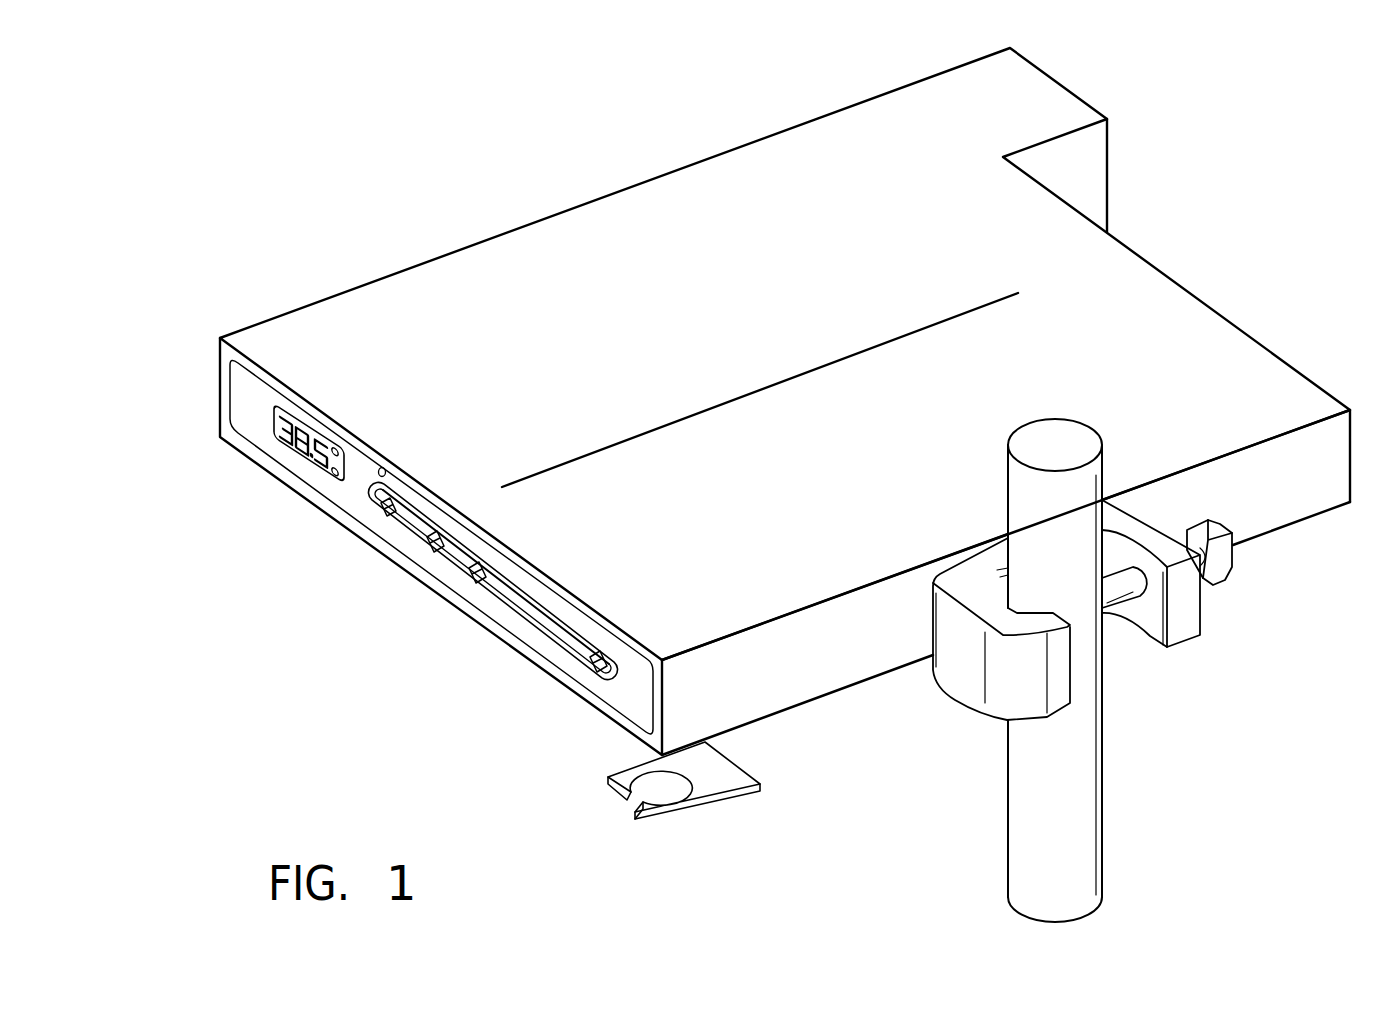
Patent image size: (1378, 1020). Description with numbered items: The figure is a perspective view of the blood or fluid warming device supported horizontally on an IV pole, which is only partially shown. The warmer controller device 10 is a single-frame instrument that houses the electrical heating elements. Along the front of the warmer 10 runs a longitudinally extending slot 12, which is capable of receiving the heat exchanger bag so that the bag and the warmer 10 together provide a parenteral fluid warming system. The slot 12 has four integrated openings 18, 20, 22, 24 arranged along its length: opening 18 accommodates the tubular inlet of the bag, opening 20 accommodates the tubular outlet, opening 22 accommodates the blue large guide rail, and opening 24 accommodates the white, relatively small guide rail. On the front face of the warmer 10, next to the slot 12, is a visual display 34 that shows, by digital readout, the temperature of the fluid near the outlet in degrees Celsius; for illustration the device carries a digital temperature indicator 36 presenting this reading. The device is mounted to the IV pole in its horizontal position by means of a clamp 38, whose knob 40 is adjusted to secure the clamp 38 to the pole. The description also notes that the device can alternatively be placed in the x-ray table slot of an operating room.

The warmer controller device 10 is at (1127, 263).
The longitudinally extending slot 12 is at (528, 613).
The integrated opening 18 is at (437, 548).
The integrated opening 20 is at (477, 578).
The integrated opening 22 is at (388, 512).
The integrated opening 24 is at (602, 666).
The visual display 34 is at (277, 412).
The digital temperature indicator 36 is at (285, 437).
The clamp 38 is at (1060, 678).
The knob 40 is at (1228, 553).